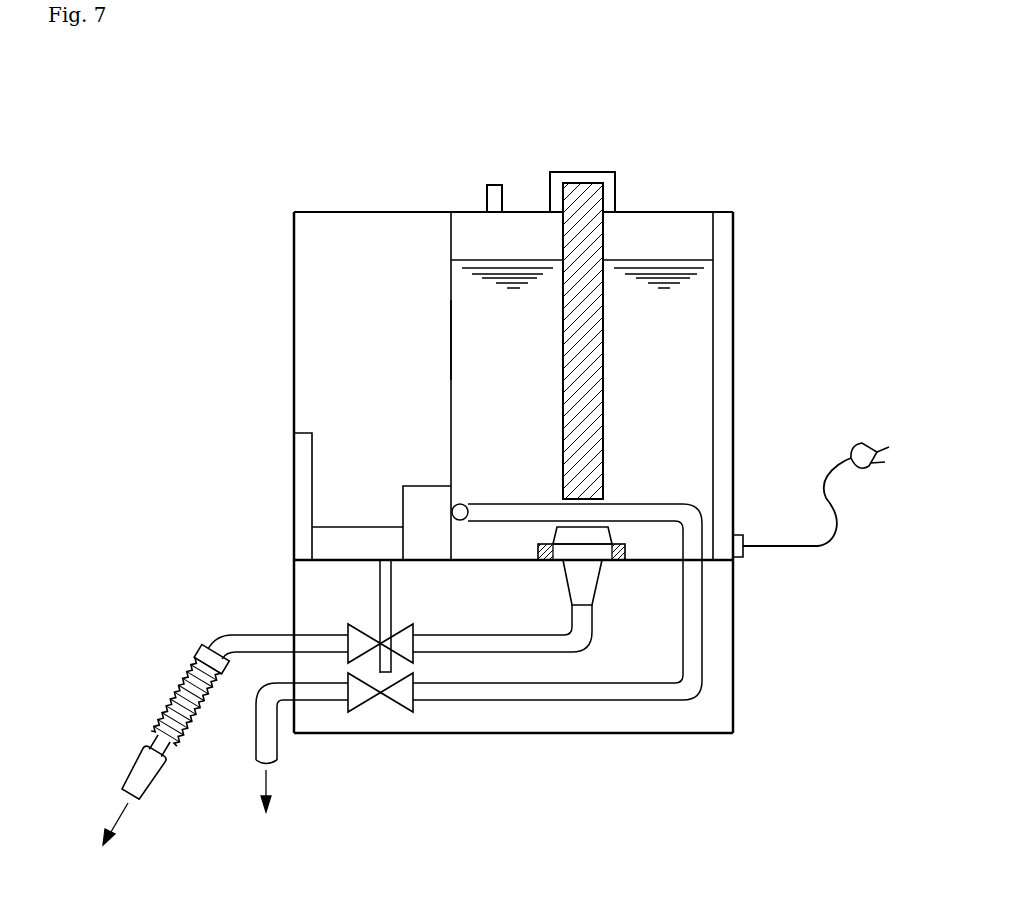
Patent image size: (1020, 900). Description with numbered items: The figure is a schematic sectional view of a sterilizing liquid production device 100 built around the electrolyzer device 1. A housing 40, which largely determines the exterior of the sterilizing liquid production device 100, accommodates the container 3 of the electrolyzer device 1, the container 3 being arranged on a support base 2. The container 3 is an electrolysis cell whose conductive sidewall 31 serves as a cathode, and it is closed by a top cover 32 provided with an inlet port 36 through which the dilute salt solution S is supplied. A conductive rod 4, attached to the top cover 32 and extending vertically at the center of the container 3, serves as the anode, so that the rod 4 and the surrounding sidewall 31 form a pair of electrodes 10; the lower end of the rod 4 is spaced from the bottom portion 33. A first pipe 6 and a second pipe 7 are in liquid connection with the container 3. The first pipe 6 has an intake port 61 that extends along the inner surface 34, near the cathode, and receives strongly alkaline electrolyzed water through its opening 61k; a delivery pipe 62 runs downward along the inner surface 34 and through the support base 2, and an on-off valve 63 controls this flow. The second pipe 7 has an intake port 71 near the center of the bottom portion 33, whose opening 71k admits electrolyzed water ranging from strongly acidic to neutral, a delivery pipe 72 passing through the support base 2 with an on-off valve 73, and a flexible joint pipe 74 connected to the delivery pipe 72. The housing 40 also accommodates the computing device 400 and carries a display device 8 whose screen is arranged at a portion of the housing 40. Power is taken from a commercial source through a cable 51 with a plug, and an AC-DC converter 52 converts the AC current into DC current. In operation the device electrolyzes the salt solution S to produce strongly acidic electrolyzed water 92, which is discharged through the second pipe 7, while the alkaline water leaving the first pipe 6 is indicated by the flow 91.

The sterilizing liquid production device 100 is at (531, 52).
The electrolyzer device 1 is at (630, 120).
The support base 2 is at (735, 595).
The container 3 is at (724, 198).
The rod 4 is at (565, 375).
The pair of electrodes 10 is at (461, 366).
The sidewall 31 is at (452, 239).
The top cover 32 is at (642, 212).
The bottom portion 33 is at (630, 535).
The inner surface 34 is at (451, 333).
The inlet port 36 is at (487, 200).
The housing 40 is at (735, 345).
The display device 8 is at (300, 472).
The computing device 400 is at (352, 525).
The AC-DC converter 52 is at (419, 486).
The dilute salt solution S is at (678, 260).
The cable 51 is at (835, 533).
The first pipe 6 is at (541, 594).
The intake port 61 is at (648, 502).
The opening 61k is at (464, 504).
The delivery pipe 62 is at (702, 652).
The on-off valve 63 is at (417, 705).
The second pipe 7 is at (330, 668).
The intake port 71 is at (545, 535).
The opening 71k is at (595, 533).
The delivery pipe 72 is at (262, 633).
The on-off valve 73 is at (418, 635).
The joint pipe 74 is at (173, 698).
The drain flow 91 is at (267, 785).
The strongly acidic electrolyzed water 92 is at (118, 820).